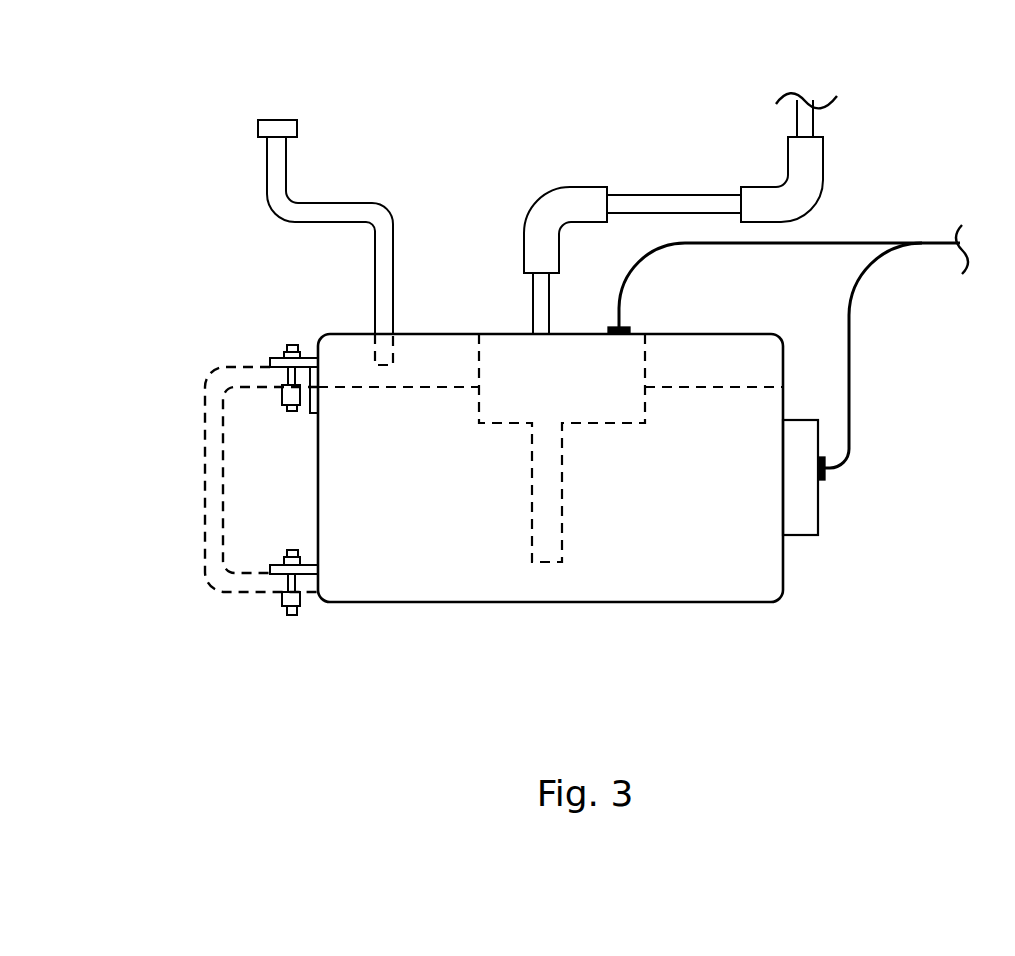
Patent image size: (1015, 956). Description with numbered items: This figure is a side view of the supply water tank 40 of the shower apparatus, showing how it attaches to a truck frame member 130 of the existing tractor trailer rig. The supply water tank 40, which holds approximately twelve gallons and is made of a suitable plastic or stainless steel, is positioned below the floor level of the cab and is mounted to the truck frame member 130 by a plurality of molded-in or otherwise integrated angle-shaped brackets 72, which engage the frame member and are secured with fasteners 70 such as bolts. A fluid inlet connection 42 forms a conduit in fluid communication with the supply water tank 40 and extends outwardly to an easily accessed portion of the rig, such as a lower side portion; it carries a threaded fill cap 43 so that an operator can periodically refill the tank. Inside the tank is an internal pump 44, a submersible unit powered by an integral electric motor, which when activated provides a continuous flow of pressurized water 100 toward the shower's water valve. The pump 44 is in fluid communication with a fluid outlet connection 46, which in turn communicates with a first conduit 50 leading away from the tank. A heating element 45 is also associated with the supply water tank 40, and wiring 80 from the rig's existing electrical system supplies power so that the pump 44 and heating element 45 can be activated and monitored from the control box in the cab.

The supply water tank 40 is at (778, 600).
The fluid inlet connection 42 is at (343, 210).
The threaded fill cap 43 is at (277, 128).
The internal pump 44 is at (507, 355).
The heating element 45 is at (800, 507).
The fluid outlet connection 46 is at (637, 207).
The first conduit 50 is at (805, 123).
The fasteners 70 is at (290, 345).
The brackets 72 is at (278, 362).
The wiring 80 is at (870, 242).
The pressurized water 100 is at (690, 385).
The truck frame member 130 is at (205, 487).